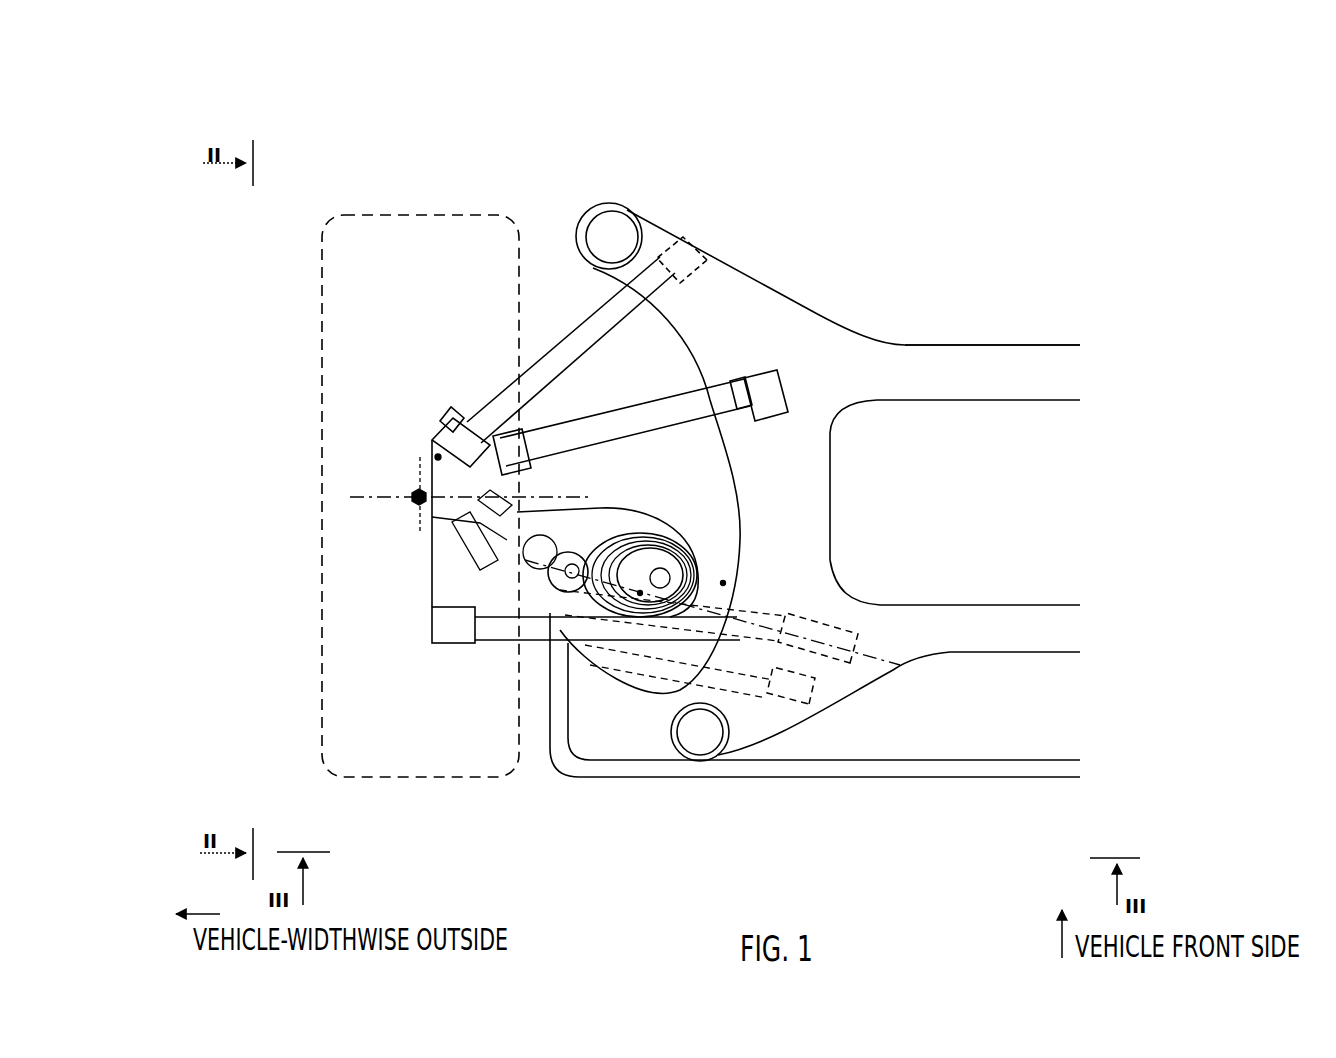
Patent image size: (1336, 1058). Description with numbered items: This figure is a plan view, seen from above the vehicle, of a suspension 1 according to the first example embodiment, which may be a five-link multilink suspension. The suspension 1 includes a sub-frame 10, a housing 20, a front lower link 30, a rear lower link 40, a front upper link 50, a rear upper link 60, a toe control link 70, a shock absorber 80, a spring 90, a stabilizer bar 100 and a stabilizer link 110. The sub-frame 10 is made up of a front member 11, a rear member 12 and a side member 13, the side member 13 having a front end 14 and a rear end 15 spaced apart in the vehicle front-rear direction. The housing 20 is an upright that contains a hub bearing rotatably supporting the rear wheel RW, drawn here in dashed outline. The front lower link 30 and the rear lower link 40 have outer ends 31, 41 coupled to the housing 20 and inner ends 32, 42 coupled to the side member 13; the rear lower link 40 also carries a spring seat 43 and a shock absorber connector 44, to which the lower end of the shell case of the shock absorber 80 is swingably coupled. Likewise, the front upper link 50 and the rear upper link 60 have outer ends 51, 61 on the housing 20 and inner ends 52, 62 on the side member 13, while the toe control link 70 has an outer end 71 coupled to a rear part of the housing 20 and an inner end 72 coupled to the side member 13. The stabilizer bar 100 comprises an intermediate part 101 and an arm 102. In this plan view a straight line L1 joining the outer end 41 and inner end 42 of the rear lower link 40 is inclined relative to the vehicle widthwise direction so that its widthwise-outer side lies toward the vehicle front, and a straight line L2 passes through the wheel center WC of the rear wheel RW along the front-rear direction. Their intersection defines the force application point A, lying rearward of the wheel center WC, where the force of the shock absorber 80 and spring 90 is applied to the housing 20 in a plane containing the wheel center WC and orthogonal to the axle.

The suspension 1 is at (354, 167).
The sub-frame 10 is at (959, 306).
The front member 11 is at (1038, 345).
The rear member 12 is at (1052, 638).
The side member 13 is at (803, 460).
The front end 14 is at (601, 203).
The rear end 15 is at (706, 760).
The housing 20 is at (460, 470).
The front lower link 30 is at (558, 344).
The outer end 31 is at (440, 424).
The inner end 32 is at (682, 235).
The rear lower link 40 is at (744, 377).
The outer end 41 is at (465, 529).
The inner end 42 is at (832, 620).
The spring seat 43 is at (633, 678).
The shock absorber connector 44 is at (505, 405).
The front upper link 50 is at (620, 414).
The outer end 51 is at (490, 441).
The inner end 52 is at (775, 380).
The rear upper link 60 is at (723, 583).
The outer end 61 is at (500, 537).
The inner end 62 is at (805, 707).
The toe control link 70 is at (520, 633).
The outer end 71 is at (540, 601).
The inner end 72 is at (858, 660).
The shock absorber 80 is at (503, 637).
The spring 90 is at (688, 568).
The stabilizer bar 100 is at (970, 793).
The intermediate part 101 is at (873, 777).
The arm 102 is at (553, 687).
The stabilizer link 110 is at (432, 606).
The rear wheel RW is at (322, 255).
The wheel center WC is at (404, 489).
The force application point A is at (399, 518).
The straight line L1 is at (768, 647).
The straight line L2 is at (410, 476).